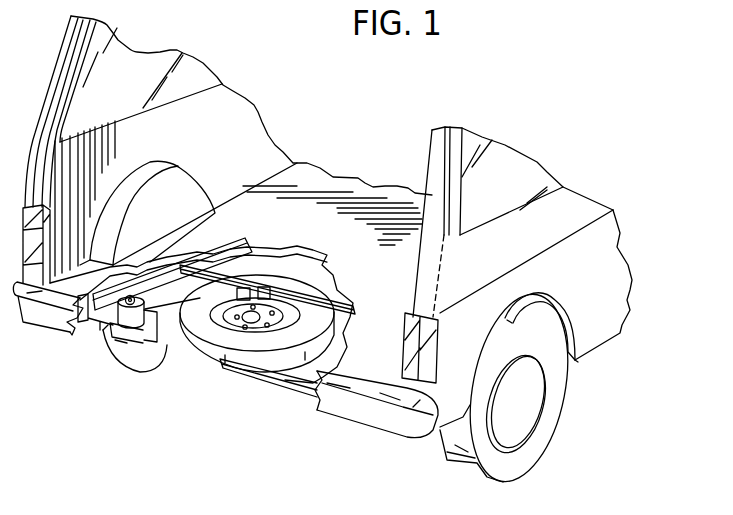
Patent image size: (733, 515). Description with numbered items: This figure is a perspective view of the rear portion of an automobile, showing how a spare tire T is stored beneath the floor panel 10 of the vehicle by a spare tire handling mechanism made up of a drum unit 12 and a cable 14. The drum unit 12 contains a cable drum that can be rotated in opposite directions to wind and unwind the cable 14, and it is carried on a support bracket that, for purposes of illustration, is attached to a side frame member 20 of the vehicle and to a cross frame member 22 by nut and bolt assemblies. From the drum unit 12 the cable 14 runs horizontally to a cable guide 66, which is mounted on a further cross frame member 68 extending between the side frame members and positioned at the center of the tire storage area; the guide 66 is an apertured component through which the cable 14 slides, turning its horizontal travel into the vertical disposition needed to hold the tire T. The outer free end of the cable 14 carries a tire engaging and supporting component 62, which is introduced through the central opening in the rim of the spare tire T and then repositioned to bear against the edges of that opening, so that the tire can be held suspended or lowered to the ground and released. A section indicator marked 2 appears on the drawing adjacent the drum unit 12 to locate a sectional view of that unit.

The floor panel 10 is at (322, 253).
The drum unit 12 is at (124, 333).
The cable 14 is at (171, 290).
The side frame member 20 is at (145, 262).
The cross frame member 22 is at (297, 392).
The tire engaging and supporting component 62 is at (258, 318).
The cable guide 66 is at (270, 287).
The cross frame member 68 is at (340, 303).
The spare tire T is at (200, 360).
The section line 2- 2 is at (133, 337).